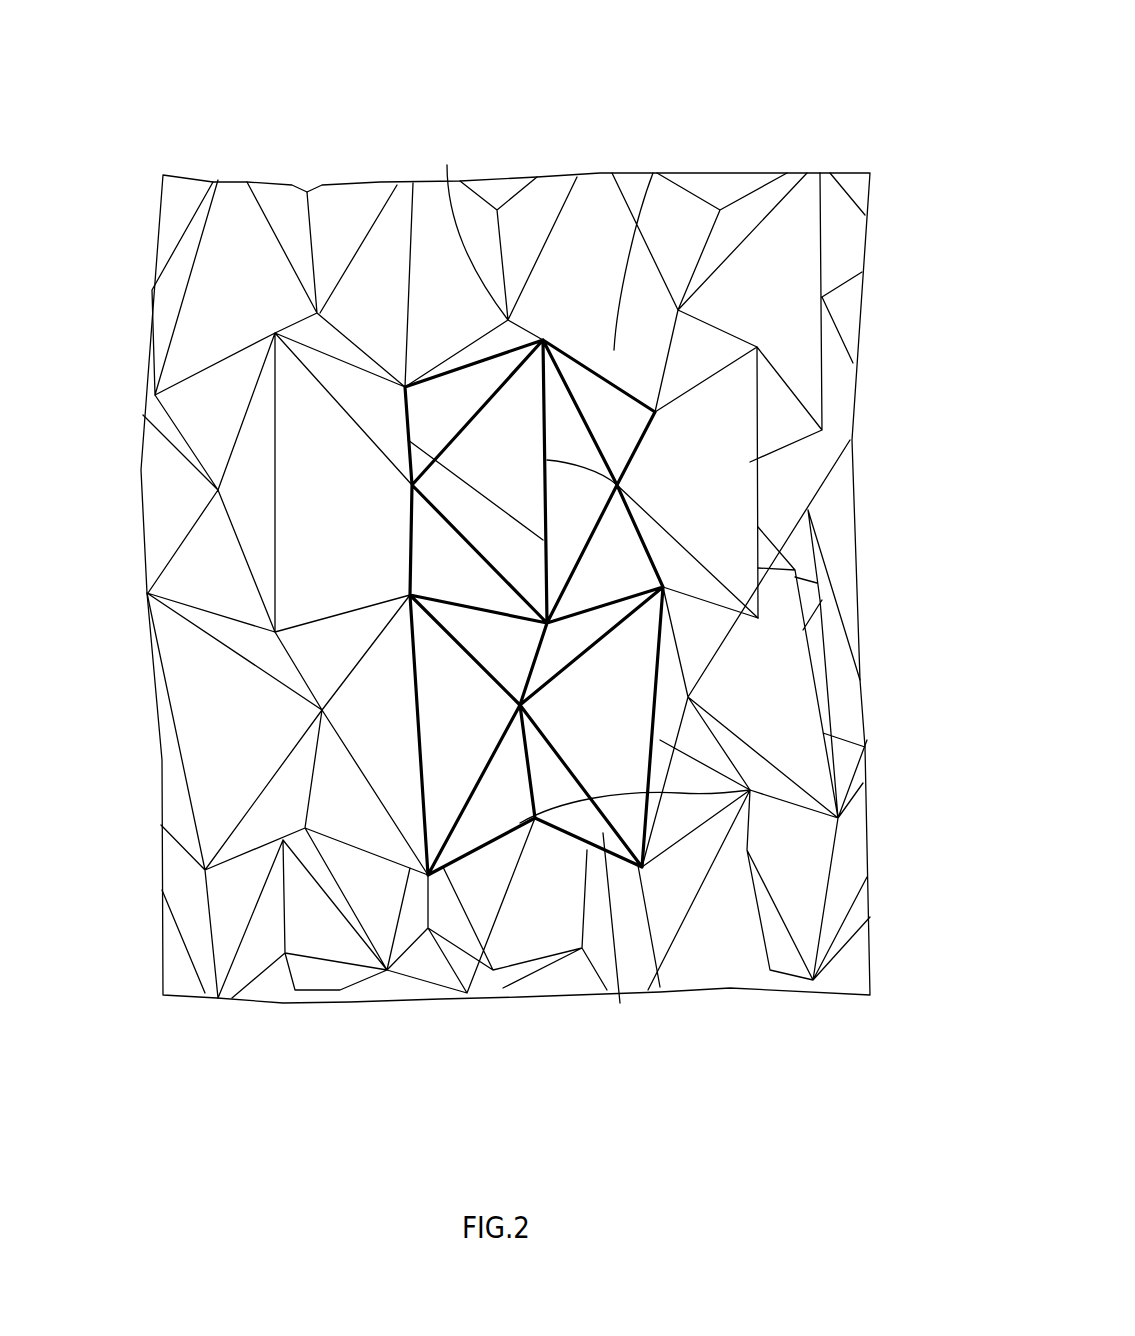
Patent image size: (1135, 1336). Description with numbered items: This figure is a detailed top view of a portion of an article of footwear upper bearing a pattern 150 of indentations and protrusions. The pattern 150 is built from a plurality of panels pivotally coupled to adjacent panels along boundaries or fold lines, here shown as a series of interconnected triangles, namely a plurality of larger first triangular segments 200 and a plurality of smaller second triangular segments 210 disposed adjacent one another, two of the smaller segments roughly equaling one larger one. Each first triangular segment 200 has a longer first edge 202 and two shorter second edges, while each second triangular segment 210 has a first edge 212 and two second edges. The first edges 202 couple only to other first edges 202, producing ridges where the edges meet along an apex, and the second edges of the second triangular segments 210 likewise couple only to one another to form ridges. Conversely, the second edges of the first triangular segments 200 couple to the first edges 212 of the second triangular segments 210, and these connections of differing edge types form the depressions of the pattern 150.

The pattern 150 is at (800, 72).
The first triangular segment 200 is at (510, 478).
The first edge 202 is at (408, 445).
The second triangular segment 210 is at (454, 418).
The first edge 212 is at (408, 505).